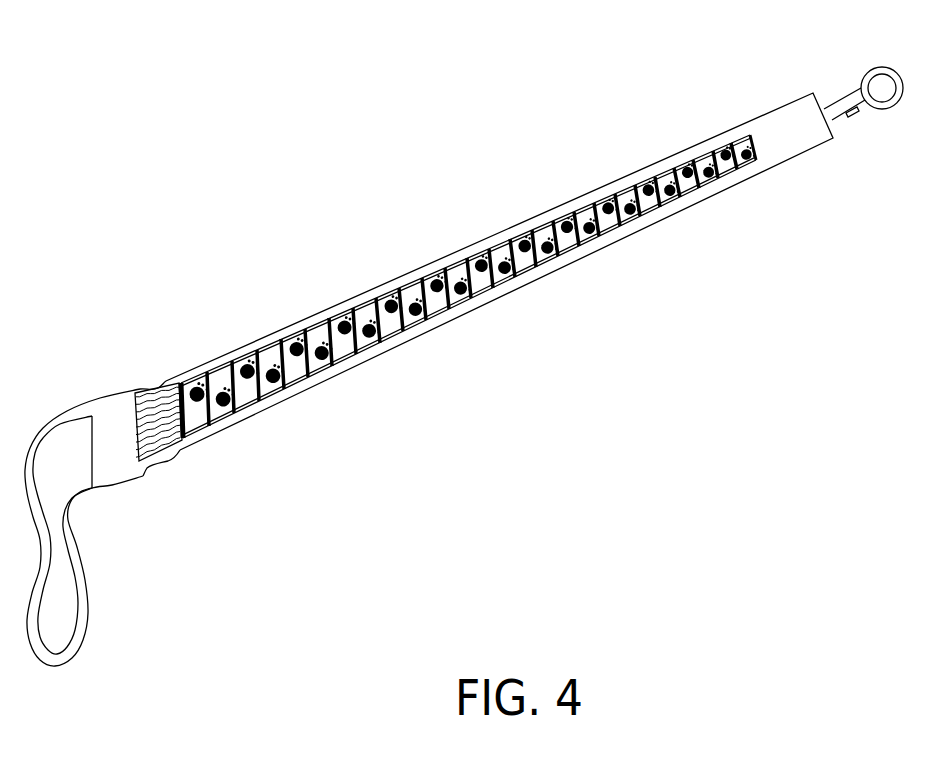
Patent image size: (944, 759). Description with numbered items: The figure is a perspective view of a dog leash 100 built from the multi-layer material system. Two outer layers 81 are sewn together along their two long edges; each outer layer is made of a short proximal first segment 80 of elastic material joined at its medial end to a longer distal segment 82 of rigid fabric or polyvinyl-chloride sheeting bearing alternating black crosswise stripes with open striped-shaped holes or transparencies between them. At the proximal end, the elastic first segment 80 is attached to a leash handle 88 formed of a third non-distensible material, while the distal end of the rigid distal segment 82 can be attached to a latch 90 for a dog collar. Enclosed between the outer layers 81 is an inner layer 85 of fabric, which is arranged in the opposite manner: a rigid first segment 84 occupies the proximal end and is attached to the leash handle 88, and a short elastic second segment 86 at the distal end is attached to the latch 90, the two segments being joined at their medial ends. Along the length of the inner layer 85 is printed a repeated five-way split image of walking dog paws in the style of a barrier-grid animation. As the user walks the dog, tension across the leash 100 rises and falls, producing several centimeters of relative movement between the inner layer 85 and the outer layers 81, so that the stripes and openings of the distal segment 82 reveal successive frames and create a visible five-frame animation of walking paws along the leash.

The dog leash 100 is at (236, 188).
The first segment 80 is at (154, 393).
The outer layers 81 is at (202, 283).
The strip 82 is at (217, 367).
The first segment of the inner layer 84 is at (481, 292).
The inner layer 85 is at (548, 258).
The second segment of the inner layer 86 is at (712, 151).
The leash handle 88 is at (83, 593).
The latch 90 is at (843, 99).